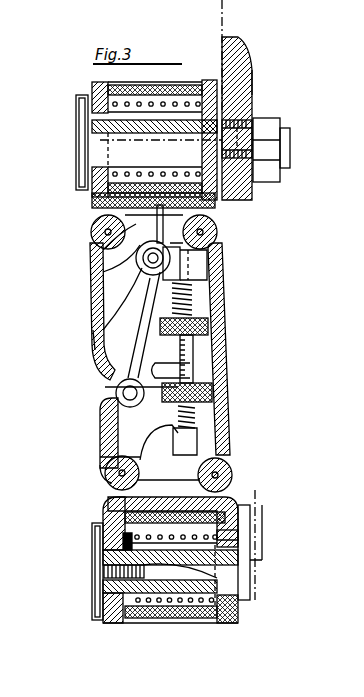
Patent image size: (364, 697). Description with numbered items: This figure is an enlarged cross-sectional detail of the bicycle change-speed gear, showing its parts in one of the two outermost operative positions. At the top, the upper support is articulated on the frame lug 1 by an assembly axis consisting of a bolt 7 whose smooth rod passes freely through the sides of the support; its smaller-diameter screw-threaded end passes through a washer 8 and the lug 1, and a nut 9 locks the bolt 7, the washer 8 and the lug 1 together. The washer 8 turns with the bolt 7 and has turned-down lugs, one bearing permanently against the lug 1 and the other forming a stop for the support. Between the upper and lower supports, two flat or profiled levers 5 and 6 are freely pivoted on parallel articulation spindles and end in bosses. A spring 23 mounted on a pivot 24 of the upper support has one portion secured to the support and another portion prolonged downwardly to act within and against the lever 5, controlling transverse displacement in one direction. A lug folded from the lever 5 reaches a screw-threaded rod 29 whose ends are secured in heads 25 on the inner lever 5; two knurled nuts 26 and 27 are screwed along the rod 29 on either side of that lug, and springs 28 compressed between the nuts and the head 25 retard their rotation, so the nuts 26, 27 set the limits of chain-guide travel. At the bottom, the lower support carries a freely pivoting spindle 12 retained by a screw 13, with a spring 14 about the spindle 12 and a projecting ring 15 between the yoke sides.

The lug 1 is at (240, 58).
The lever 5 is at (98, 311).
The lever 6 is at (224, 325).
The bolt 7 is at (115, 148).
The washer 8 is at (281, 172).
The nut 9 is at (263, 150).
The spindle 12 is at (220, 622).
The screw 13 is at (120, 561).
The spring 14 is at (180, 598).
The projecting ring 15 is at (151, 598).
The spring 23 is at (100, 339).
The pivot 24 is at (100, 291).
The head 25 is at (185, 263).
The knurled nut 26 is at (212, 396).
The knurled nut 27 is at (207, 329).
The spring 28 is at (195, 301).
The screw-threaded rod 29 is at (193, 359).